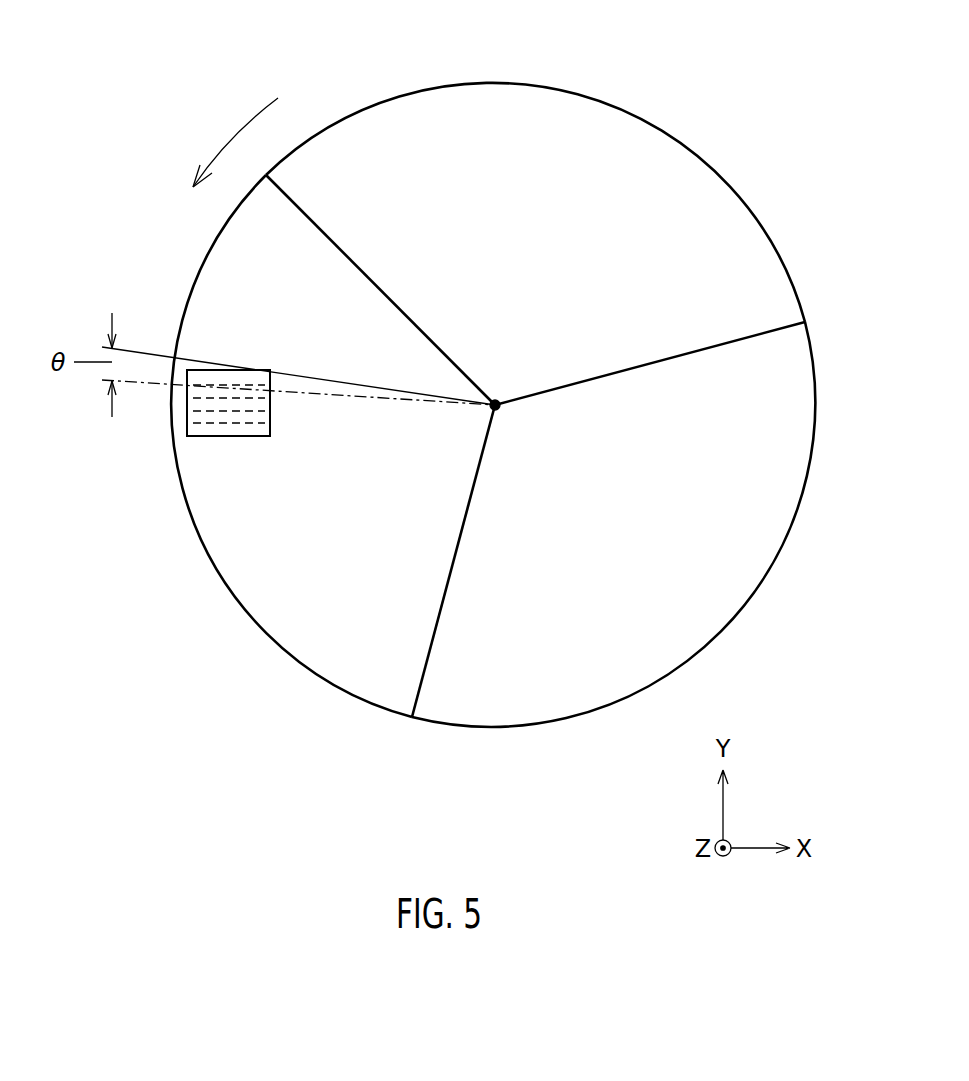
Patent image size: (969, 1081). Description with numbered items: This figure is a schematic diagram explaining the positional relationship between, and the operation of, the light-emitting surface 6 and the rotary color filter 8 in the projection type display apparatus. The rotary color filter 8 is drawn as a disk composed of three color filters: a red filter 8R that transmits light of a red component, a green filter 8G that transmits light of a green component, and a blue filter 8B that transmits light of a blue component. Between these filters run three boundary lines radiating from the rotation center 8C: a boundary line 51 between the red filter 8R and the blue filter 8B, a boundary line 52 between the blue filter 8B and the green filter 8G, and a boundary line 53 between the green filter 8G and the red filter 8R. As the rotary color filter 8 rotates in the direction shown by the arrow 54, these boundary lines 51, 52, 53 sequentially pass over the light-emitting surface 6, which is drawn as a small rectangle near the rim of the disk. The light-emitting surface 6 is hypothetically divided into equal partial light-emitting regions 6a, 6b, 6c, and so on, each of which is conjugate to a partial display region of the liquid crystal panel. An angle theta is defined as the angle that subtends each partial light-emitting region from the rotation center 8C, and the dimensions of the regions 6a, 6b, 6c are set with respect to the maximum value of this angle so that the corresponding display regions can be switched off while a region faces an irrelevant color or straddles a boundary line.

The rotary color filter 8 is at (493, 397).
The red filter 8R is at (574, 105).
The green filter 8G is at (723, 615).
The blue filter 8B is at (280, 628).
The rotation center 8C is at (497, 400).
The boundary line 51 is at (312, 220).
The boundary line 52 is at (428, 673).
The boundary line 53 is at (763, 330).
The arrow 54 is at (238, 133).
The light-emitting surface 6 is at (292, 422).
The partial light-emitting region 6a is at (208, 376).
The partial light-emitting region 6b is at (183, 390).
The partial light-emitting region 6c is at (187, 403).